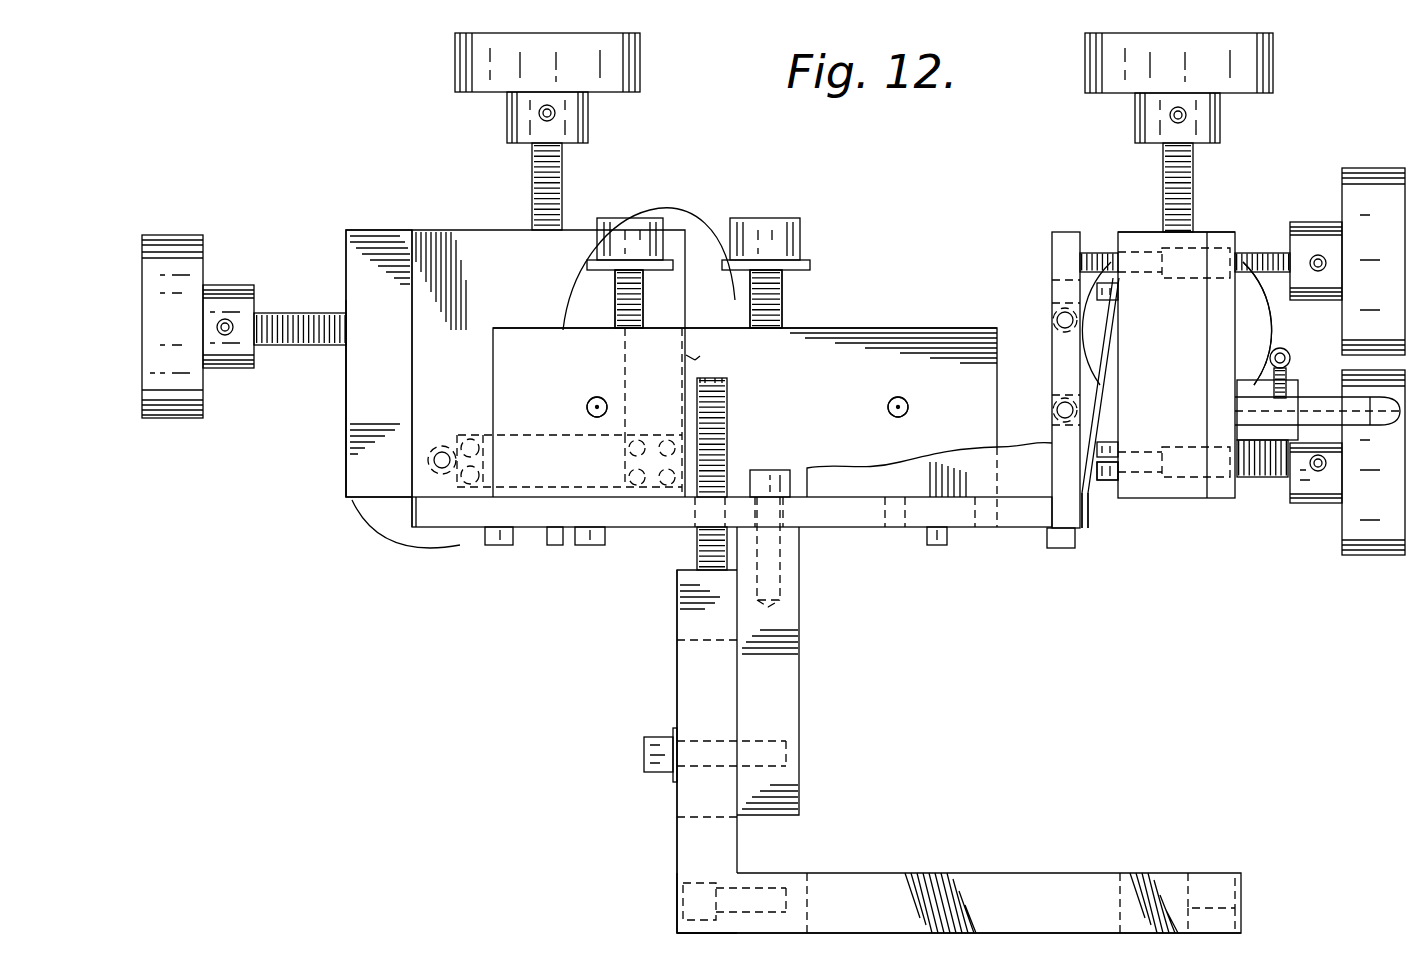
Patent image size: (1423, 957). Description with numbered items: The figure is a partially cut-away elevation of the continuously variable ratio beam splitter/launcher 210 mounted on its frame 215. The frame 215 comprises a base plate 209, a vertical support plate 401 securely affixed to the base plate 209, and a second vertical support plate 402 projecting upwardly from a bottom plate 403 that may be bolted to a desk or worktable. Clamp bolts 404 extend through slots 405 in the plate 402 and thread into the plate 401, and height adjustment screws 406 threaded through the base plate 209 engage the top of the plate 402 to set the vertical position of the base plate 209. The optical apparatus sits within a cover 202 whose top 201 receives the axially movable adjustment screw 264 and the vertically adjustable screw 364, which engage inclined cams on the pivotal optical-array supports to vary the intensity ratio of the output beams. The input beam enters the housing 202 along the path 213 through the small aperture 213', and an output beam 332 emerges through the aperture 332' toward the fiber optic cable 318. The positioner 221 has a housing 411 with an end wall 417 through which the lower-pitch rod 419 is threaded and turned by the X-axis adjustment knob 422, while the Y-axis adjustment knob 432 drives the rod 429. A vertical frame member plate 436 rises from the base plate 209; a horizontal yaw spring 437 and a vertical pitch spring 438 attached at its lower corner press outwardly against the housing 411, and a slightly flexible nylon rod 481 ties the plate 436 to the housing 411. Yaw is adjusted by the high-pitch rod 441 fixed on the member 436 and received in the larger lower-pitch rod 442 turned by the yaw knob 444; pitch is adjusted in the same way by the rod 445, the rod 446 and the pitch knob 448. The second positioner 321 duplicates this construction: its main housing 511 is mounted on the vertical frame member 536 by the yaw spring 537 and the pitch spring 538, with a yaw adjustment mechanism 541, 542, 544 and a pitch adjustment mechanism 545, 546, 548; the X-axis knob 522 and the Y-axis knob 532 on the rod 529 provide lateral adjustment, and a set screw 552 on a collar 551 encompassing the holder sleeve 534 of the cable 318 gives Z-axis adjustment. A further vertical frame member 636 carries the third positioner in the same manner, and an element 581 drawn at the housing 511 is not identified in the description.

The top of cover 201 is at (878, 328).
The cover 202 is at (530, 316).
The base plate 209 is at (845, 525).
The continuously variable ratio beam splitter/launcher 210 is at (892, 287).
The input beam path 213 is at (630, 403).
The input aperture 213' is at (572, 390).
The frame 215 is at (666, 705).
The positioner 221 is at (462, 216).
The adjustment screw 264 is at (615, 298).
The fiber optic cable 318 is at (1412, 408).
The positioner 321 is at (1232, 226).
The output beam 332 is at (930, 417).
The output aperture 332' is at (861, 403).
The vertically adjustable screw 364 is at (782, 298).
The vertical support plate 401 is at (792, 716).
The vertical support plate 402 is at (677, 866).
The bottom plate 403 is at (1062, 873).
The clamp bolts 404 is at (644, 760).
The slots 405 is at (680, 640).
The height adjustment screws 406 is at (727, 420).
The positioner housing 411 is at (376, 228).
The end wall 417 is at (346, 432).
The lower-pitch threaded rod 419 is at (322, 303).
The X-axis adjustment knob 422 is at (148, 418).
The lower-pitch threaded rod 429 is at (532, 177).
The Y-axis adjustment knob 432 is at (643, 75).
The vertical frame member plate 436 is at (412, 368).
The yaw leaf spring 437 is at (550, 435).
The pitch leaf spring 438 is at (716, 412).
The high-pitch threaded rod 441 is at (434, 462).
The lower-pitch threaded rod 442 is at (430, 448).
The yaw adjustment knob 444 is at (460, 545).
The high-pitch threaded rod 445 is at (672, 222).
The lower-pitch threaded rod 446 is at (654, 222).
The pitch adjustment knob 448 is at (690, 152).
The flexible threaded rod 481 is at (627, 455).
The main housing 511 is at (1168, 498).
The X-axis adjustment knob 522 is at (1262, 348).
The Y-axis rod 529 is at (1163, 165).
The Y-axis adjustment knob 532 is at (1275, 72).
The holder sleeve 534 is at (1330, 435).
The vertical frame member 536 is at (1080, 212).
The yaw leaf spring 537 is at (1086, 528).
The pitch leaf spring 538 is at (1097, 347).
The yaw adjustment mechanism rod 541 is at (1110, 480).
The yaw adjustment mechanism rod 542 is at (1262, 477).
The yaw adjustment knob 544 is at (1385, 555).
The pitch adjustment mechanism rod 545 is at (1092, 253).
The pitch adjustment mechanism rod 546 is at (1258, 253).
The pitch adjustment knob 548 is at (1395, 165).
The collar 551 is at (1298, 388).
The set screw 552 is at (1288, 350).
The screws 581 is at (1118, 450).
The vertical frame member 636 is at (900, 471).